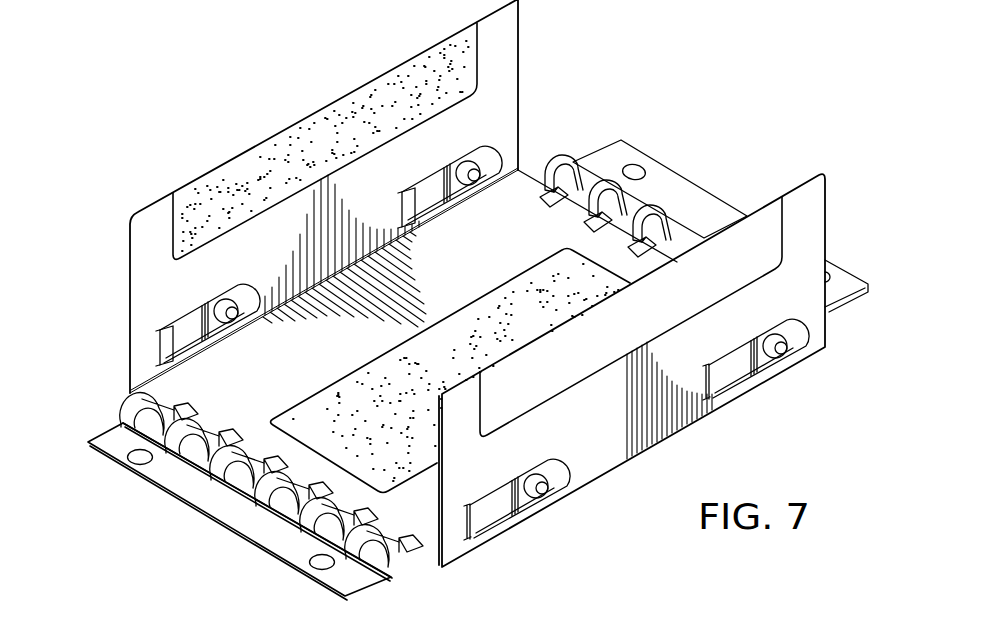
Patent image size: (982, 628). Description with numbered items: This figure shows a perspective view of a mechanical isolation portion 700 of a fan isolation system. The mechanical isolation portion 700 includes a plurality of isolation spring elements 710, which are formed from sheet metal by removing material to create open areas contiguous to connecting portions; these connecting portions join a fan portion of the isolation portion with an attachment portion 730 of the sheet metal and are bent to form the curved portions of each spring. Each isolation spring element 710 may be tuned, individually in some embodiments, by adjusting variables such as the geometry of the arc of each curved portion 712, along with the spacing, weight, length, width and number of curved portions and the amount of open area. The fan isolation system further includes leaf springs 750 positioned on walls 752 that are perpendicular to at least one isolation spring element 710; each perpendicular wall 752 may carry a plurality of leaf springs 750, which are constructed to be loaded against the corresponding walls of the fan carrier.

The mechanical isolation portion 700 is at (464, 300).
The isolation spring element 710 is at (553, 172).
The curved portion 712 is at (116, 398).
The attachment portion 730 is at (150, 483).
The leaf spring 750 is at (730, 372).
The wall 752 is at (798, 190).